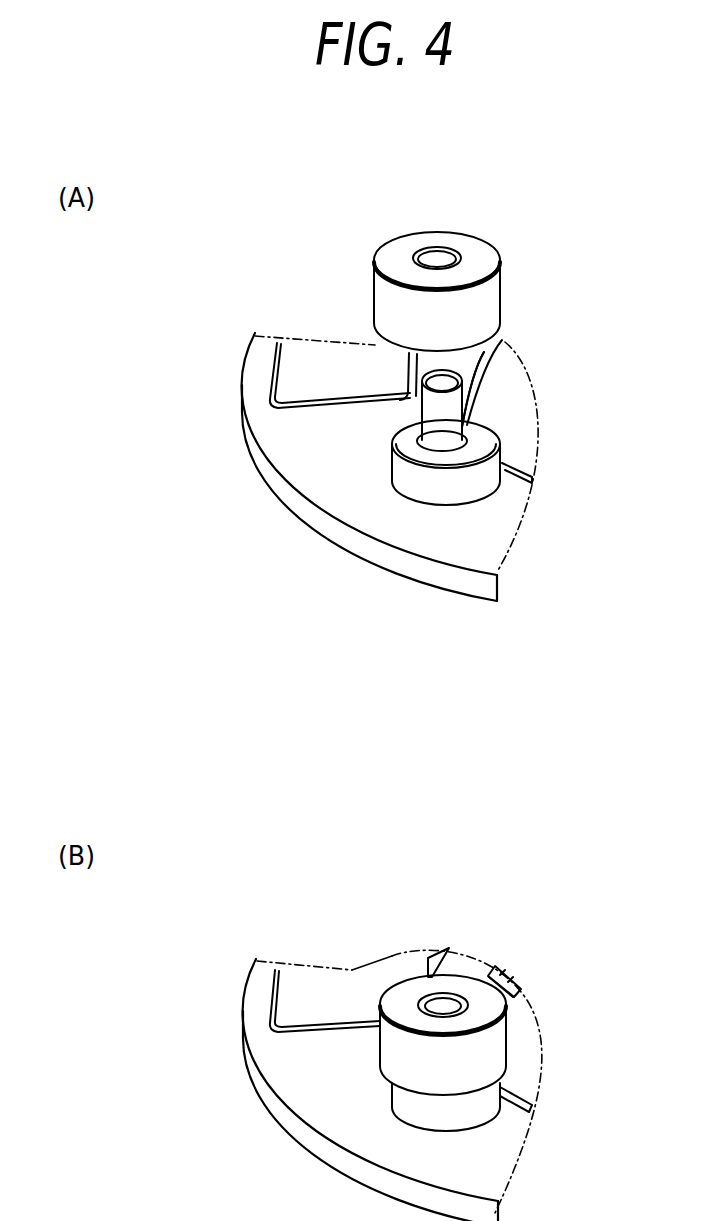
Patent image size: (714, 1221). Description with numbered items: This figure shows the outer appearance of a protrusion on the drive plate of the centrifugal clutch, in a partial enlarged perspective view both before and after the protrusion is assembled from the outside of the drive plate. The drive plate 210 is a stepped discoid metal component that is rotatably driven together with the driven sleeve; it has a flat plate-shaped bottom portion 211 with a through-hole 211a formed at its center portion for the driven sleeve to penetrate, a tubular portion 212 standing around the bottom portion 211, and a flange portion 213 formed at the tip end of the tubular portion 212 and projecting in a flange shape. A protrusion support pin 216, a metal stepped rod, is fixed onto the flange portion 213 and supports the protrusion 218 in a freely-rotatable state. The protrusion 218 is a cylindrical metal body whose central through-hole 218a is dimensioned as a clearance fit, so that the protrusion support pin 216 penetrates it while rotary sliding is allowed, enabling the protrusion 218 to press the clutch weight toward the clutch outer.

The drive plate 210 is at (234, 321).
The bottom portion 211 is at (490, 346).
The through-hole 211a is at (478, 401).
The tubular portion 212 is at (430, 362).
The flange portion 213 is at (272, 433).
The protrusion support pin 216 is at (440, 422).
The protrusion 218 is at (390, 252).
The through-hole 218a is at (430, 262).